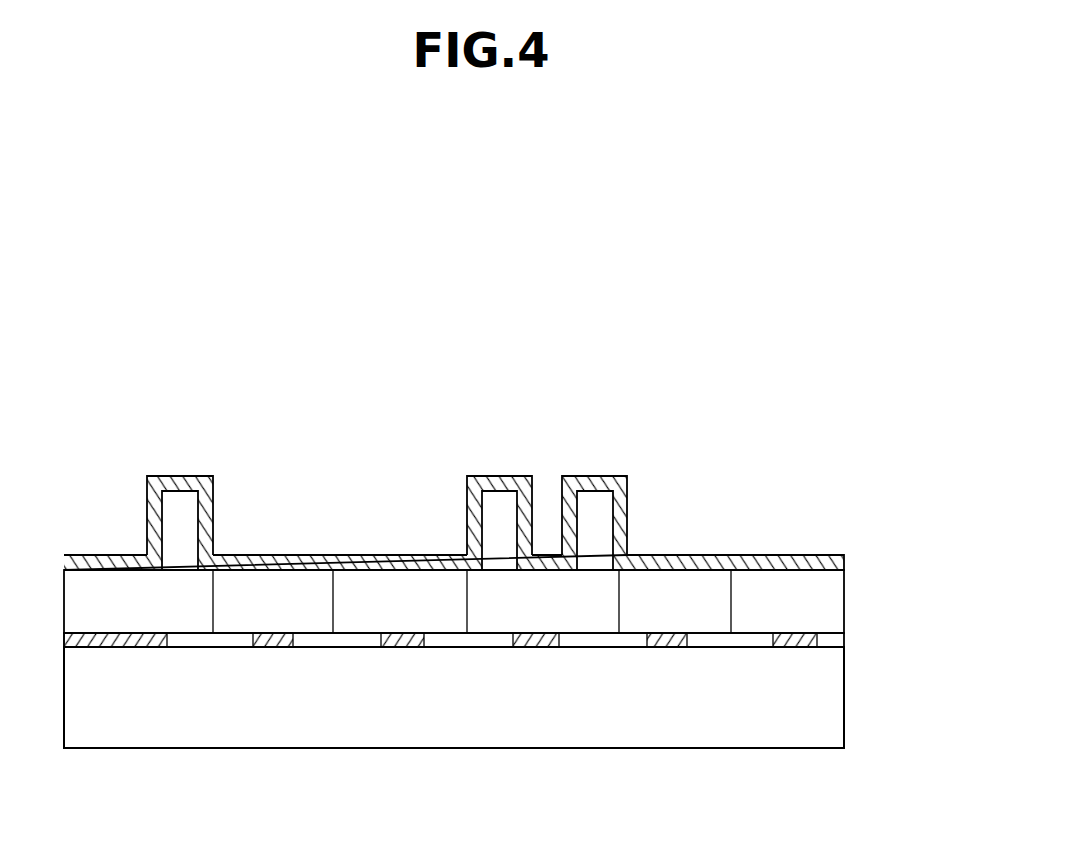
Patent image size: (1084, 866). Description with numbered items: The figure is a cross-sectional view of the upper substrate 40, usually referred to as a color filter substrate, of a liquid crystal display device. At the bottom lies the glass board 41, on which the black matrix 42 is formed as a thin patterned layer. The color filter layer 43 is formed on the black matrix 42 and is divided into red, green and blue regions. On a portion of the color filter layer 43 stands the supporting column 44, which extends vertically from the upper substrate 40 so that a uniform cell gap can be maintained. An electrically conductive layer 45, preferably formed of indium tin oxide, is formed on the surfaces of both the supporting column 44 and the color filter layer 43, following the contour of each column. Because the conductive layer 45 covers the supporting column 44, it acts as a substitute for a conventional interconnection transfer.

The upper substrate 40 is at (505, 519).
The glass board 41 is at (833, 710).
The black matrix 42 is at (837, 641).
The color filter layer 43 is at (828, 596).
The supporting column 44 is at (598, 523).
The electrically conductive layer 45 is at (603, 475).